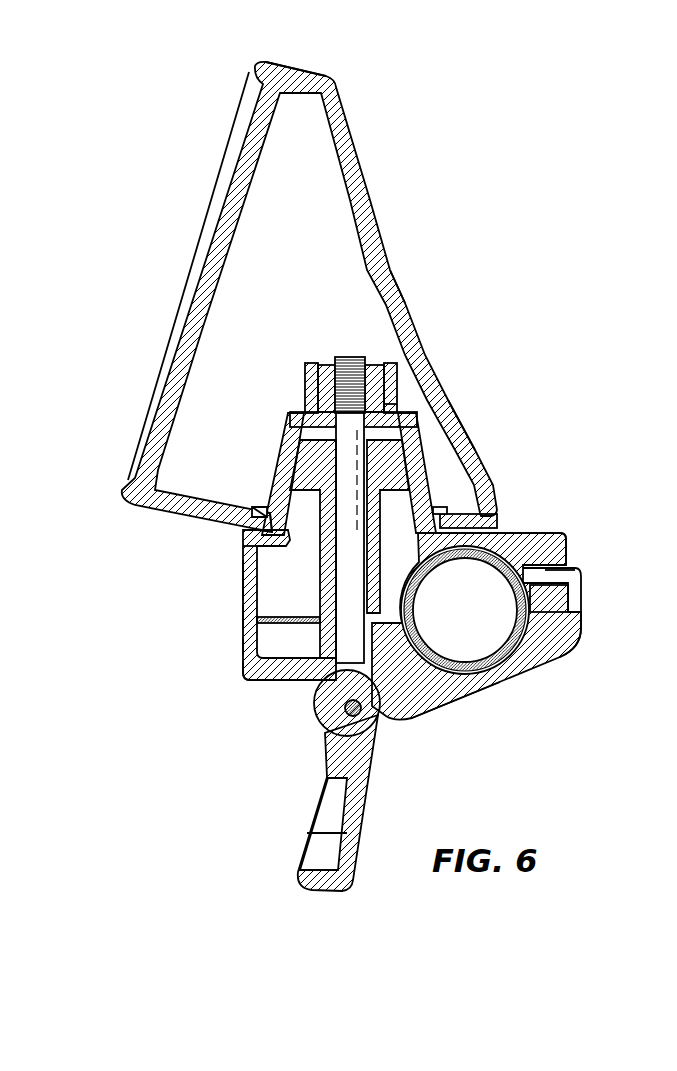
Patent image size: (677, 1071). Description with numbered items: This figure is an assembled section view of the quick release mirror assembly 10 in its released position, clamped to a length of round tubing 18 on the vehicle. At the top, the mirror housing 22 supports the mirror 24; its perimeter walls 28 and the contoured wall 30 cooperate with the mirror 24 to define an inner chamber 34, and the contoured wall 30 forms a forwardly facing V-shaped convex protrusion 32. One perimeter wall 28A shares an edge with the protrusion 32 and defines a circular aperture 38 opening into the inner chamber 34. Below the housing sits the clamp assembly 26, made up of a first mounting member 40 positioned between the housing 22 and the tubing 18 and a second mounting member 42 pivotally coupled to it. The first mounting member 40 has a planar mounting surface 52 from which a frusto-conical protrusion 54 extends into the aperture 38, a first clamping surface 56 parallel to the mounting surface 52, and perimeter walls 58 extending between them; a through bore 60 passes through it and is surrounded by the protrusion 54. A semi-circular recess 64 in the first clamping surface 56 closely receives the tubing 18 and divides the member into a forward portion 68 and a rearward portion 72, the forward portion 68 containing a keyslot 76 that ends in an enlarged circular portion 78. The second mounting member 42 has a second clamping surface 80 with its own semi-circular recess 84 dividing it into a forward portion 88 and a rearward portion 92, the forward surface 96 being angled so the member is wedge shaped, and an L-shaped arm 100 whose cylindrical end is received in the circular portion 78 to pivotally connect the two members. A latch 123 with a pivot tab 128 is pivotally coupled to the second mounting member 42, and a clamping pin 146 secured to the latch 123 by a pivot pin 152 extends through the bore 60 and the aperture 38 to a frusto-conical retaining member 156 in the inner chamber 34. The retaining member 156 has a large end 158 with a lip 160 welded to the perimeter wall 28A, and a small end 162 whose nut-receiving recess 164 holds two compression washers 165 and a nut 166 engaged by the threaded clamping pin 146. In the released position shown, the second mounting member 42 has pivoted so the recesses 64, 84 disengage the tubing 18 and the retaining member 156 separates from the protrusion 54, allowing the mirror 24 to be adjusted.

The quick release mirror assembly 10 is at (503, 292).
The round tubing 18 is at (425, 640).
The mirror housing 22 is at (377, 240).
The mirror 24 is at (170, 332).
The clamp assembly 26 is at (233, 748).
The perimeter walls 28 is at (300, 78).
The perimeter wall 28A is at (243, 538).
The contoured wall 30 is at (402, 298).
The convex protrusion 32 is at (477, 436).
The inner chamber 34 is at (272, 280).
The aperture 38 is at (262, 512).
The first mounting member 40 is at (243, 607).
The second mounting member 42 is at (243, 645).
The mounting surface 52 is at (530, 533).
The frusto-conical protrusion 54 is at (294, 420).
The first clamping surface 56 is at (243, 618).
The perimeter walls 58 is at (243, 578).
The through bore 60 is at (363, 545).
The semi-circular recess 64 is at (562, 538).
The forward portion 68 is at (505, 532).
The rearward portion 72 is at (245, 553).
The keyslot 76 is at (570, 588).
The circular portion 78 is at (512, 598).
The second clamping surface 80 is at (260, 623).
The semi-circular recess 84 is at (530, 682).
The forward portion 88 is at (560, 665).
The rearward portion 92 is at (245, 668).
The forward surface 96 is at (470, 712).
The L-shaped arm 100 is at (580, 640).
The latch 123 is at (355, 842).
The pivot tab 128 is at (378, 712).
The clamping pin 146 is at (318, 522).
The pivot pin 152 is at (344, 706).
The frusto-conical retaining member 156 is at (297, 412).
The large end 158 is at (278, 470).
The lip 160 is at (443, 508).
The small end 162 is at (307, 383).
The nut-receiving recess 164 is at (327, 365).
The compression washers 165 is at (383, 404).
The nut 166 is at (378, 364).